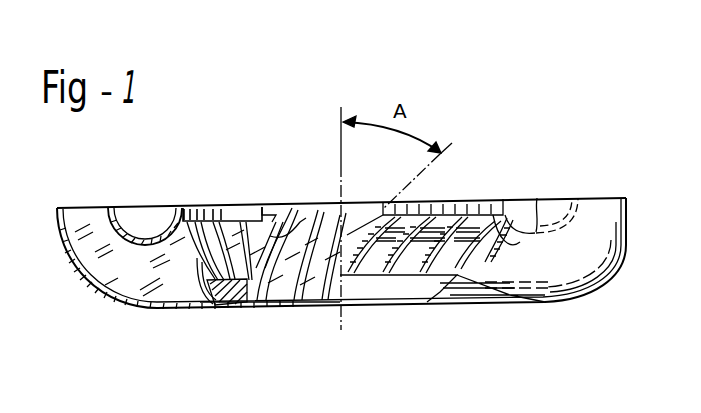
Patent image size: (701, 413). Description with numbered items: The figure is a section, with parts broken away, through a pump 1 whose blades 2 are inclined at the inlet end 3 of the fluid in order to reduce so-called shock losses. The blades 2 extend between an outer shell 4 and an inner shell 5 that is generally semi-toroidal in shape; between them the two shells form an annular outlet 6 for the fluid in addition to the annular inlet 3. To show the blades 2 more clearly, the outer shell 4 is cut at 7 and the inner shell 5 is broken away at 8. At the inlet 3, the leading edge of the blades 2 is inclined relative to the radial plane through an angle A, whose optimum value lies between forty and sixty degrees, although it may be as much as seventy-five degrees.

The pump 1 is at (229, 196).
The blades 2 is at (150, 272).
The inlet end 3 is at (207, 305).
The outer shell 4 is at (92, 288).
The inner shell 5 is at (140, 207).
The annular outlet 6 is at (96, 207).
The cut in outer shell 7 is at (485, 207).
The break in inner shell 8 is at (384, 212).